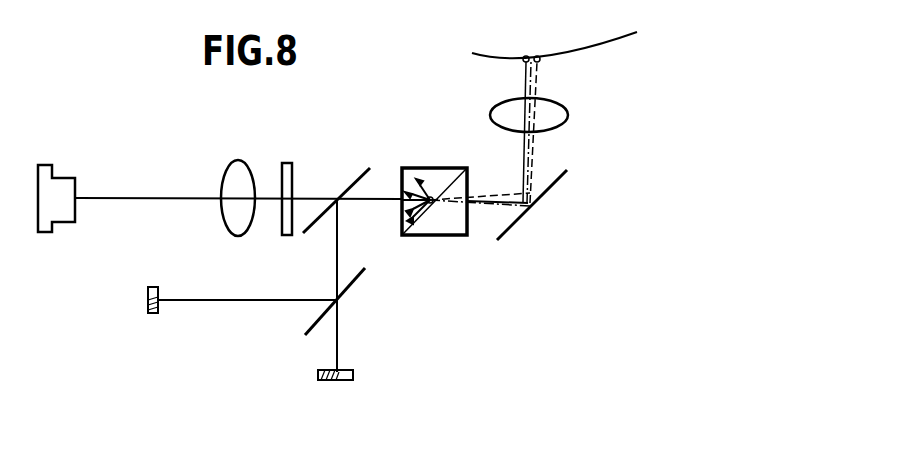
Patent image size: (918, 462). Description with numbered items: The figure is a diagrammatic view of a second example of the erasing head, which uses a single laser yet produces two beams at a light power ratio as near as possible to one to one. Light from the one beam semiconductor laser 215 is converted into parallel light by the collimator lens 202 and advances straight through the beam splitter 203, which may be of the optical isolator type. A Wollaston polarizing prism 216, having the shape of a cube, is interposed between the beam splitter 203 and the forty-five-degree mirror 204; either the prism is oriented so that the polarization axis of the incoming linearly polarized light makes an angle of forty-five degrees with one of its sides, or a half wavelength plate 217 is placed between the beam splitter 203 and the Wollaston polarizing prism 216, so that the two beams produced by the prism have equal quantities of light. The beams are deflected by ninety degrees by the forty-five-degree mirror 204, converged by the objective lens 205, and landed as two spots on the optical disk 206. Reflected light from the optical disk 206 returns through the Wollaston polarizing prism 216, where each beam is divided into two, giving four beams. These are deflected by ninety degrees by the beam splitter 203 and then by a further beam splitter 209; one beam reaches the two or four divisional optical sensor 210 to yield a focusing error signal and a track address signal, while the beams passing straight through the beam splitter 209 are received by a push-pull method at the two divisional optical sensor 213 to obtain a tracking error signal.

The one beam semiconductor laser 215 is at (67, 178).
The collimator lens 202 is at (247, 165).
The half wavelength plate 217 is at (282, 222).
The beam splitter 203 is at (362, 168).
The Wollaston polarizing prism 216 is at (437, 168).
The 45-degree mirror 204 is at (557, 178).
The objective lens 205 is at (568, 113).
The optical disk 206 is at (583, 49).
The beam splitter 209 is at (363, 273).
The two or four divisional optical sensor 210 is at (150, 315).
The two divisional optical sensor 213 is at (353, 372).